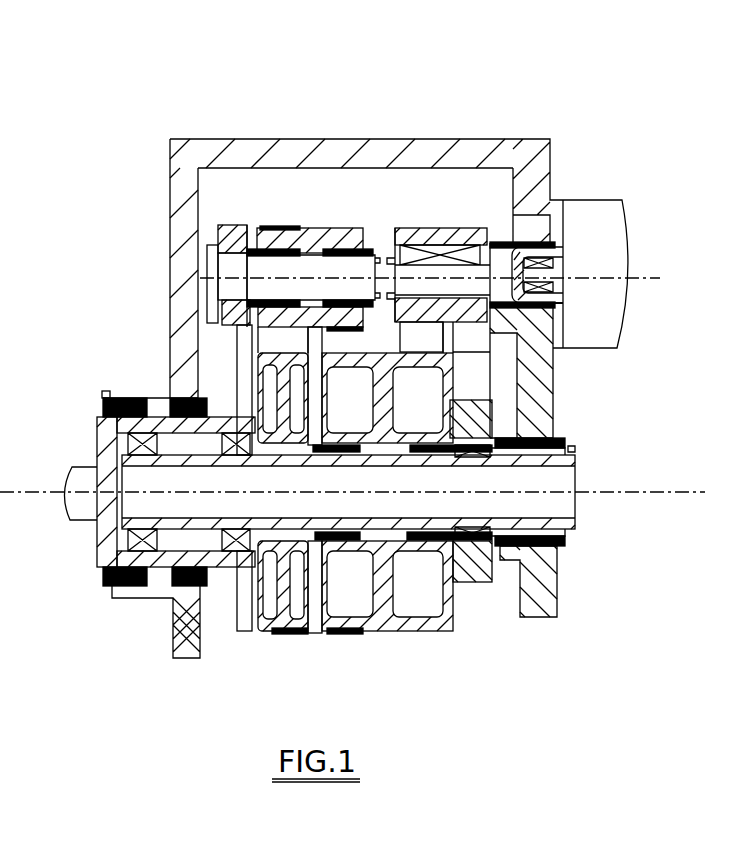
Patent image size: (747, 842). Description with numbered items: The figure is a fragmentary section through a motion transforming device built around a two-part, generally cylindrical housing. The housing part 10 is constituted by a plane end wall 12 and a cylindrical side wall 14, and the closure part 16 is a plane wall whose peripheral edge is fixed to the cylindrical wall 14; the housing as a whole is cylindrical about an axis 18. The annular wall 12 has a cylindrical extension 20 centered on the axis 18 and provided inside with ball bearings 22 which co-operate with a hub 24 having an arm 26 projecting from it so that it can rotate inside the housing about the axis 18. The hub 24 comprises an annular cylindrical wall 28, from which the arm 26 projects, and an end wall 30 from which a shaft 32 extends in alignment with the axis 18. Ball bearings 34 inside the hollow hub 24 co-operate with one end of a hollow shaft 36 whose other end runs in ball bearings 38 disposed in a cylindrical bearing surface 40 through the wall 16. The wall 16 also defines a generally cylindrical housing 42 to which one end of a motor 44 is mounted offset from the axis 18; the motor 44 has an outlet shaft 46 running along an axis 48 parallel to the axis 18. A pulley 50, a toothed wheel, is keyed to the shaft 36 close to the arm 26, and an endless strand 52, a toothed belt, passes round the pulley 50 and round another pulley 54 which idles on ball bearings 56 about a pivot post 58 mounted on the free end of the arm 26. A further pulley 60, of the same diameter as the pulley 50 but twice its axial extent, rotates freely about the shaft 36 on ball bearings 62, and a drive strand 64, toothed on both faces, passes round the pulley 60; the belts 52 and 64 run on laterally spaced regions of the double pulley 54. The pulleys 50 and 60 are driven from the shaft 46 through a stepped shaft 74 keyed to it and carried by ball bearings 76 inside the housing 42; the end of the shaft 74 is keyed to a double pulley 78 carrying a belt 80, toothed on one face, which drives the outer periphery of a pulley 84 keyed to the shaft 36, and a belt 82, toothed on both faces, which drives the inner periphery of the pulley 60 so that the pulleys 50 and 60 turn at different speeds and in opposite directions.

The housing part 10 is at (168, 172).
The end wall 12 is at (180, 248).
The cylindrical side wall 14 is at (473, 153).
The closure part 16 is at (533, 367).
The axis 18 is at (642, 492).
The cylindrical extension 20 is at (130, 401).
The ball bearings 22 is at (203, 580).
The hub 24 is at (97, 482).
The arm 26 is at (235, 316).
The annular cylindrical wall 28 is at (166, 425).
The end wall 30 is at (110, 578).
The shaft 32 is at (82, 511).
The ball bearings 34 is at (226, 578).
The hollow shaft 36 is at (574, 449).
The ball bearings 38 is at (570, 534).
The cylindrical bearing surface 40 is at (520, 535).
The housing 42 is at (557, 220).
The motor 44 is at (617, 235).
The outlet shaft 46 is at (567, 247).
The axis 48 is at (642, 276).
The pulley 50 is at (303, 618).
The endless strand 52 is at (277, 336).
The pulley 54 is at (343, 243).
The ball bearings 56 is at (276, 236).
The pivot post 58 is at (230, 270).
The pulley 60 is at (390, 618).
The ball bearings 62 is at (445, 612).
The drive strand 64 is at (231, 303).
The stepped shaft 74 is at (415, 268).
The ball bearings 76 is at (545, 242).
The double pulley 78 is at (445, 238).
The belt 80 is at (473, 382).
The belt 82 is at (423, 335).
The pulley 84 is at (482, 565).